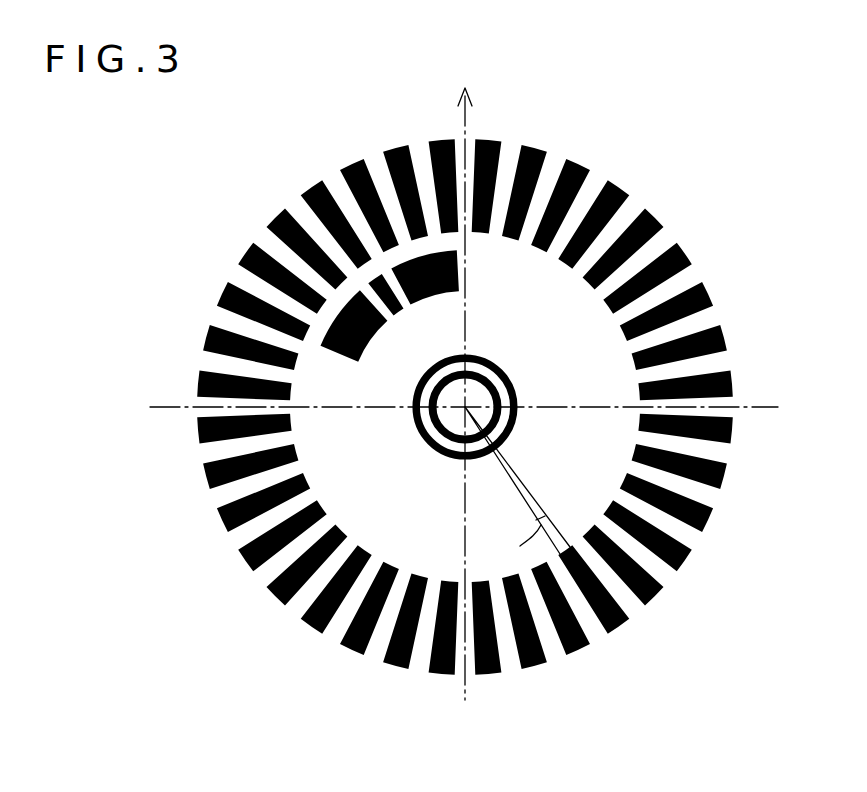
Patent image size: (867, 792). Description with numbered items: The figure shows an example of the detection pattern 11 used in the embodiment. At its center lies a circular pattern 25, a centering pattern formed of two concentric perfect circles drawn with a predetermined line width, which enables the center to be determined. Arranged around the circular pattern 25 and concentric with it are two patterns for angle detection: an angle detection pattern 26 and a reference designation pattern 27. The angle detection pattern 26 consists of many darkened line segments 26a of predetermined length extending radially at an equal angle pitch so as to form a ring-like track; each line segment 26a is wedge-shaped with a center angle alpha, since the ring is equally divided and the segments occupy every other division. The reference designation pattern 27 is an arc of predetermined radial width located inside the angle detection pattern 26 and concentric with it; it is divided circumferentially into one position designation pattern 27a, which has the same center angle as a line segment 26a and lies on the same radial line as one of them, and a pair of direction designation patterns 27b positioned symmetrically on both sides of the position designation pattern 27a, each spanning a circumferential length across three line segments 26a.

The detection pattern 11 is at (464, 394).
The circular pattern 25 is at (513, 381).
The angle detection pattern 26 is at (475, 392).
The line segment 26a is at (303, 188).
The reference designation pattern 27 is at (442, 384).
The position designation pattern 27a is at (395, 315).
The direction designation pattern 27b is at (437, 292).